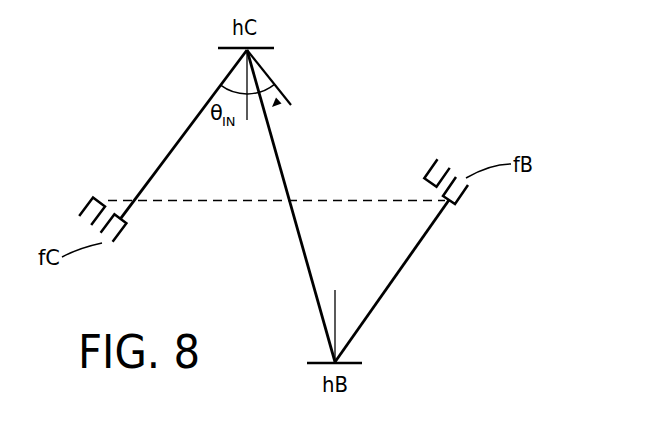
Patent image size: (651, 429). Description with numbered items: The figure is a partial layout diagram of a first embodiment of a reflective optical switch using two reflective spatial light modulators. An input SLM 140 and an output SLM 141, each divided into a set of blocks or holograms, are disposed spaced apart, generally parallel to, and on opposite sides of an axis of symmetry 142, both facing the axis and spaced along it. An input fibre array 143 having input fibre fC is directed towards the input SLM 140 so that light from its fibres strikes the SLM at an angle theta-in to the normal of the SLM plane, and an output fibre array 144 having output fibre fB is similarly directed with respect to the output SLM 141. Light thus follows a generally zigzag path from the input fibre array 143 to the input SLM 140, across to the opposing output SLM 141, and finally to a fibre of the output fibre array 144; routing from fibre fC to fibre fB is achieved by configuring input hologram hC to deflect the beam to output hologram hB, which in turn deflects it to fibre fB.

The input SLM 140 is at (225, 47).
The output SLM 141 is at (355, 365).
The axis of symmetry 142 is at (88, 200).
The input fibre array 143 is at (124, 226).
The output fibre array 144 is at (467, 195).